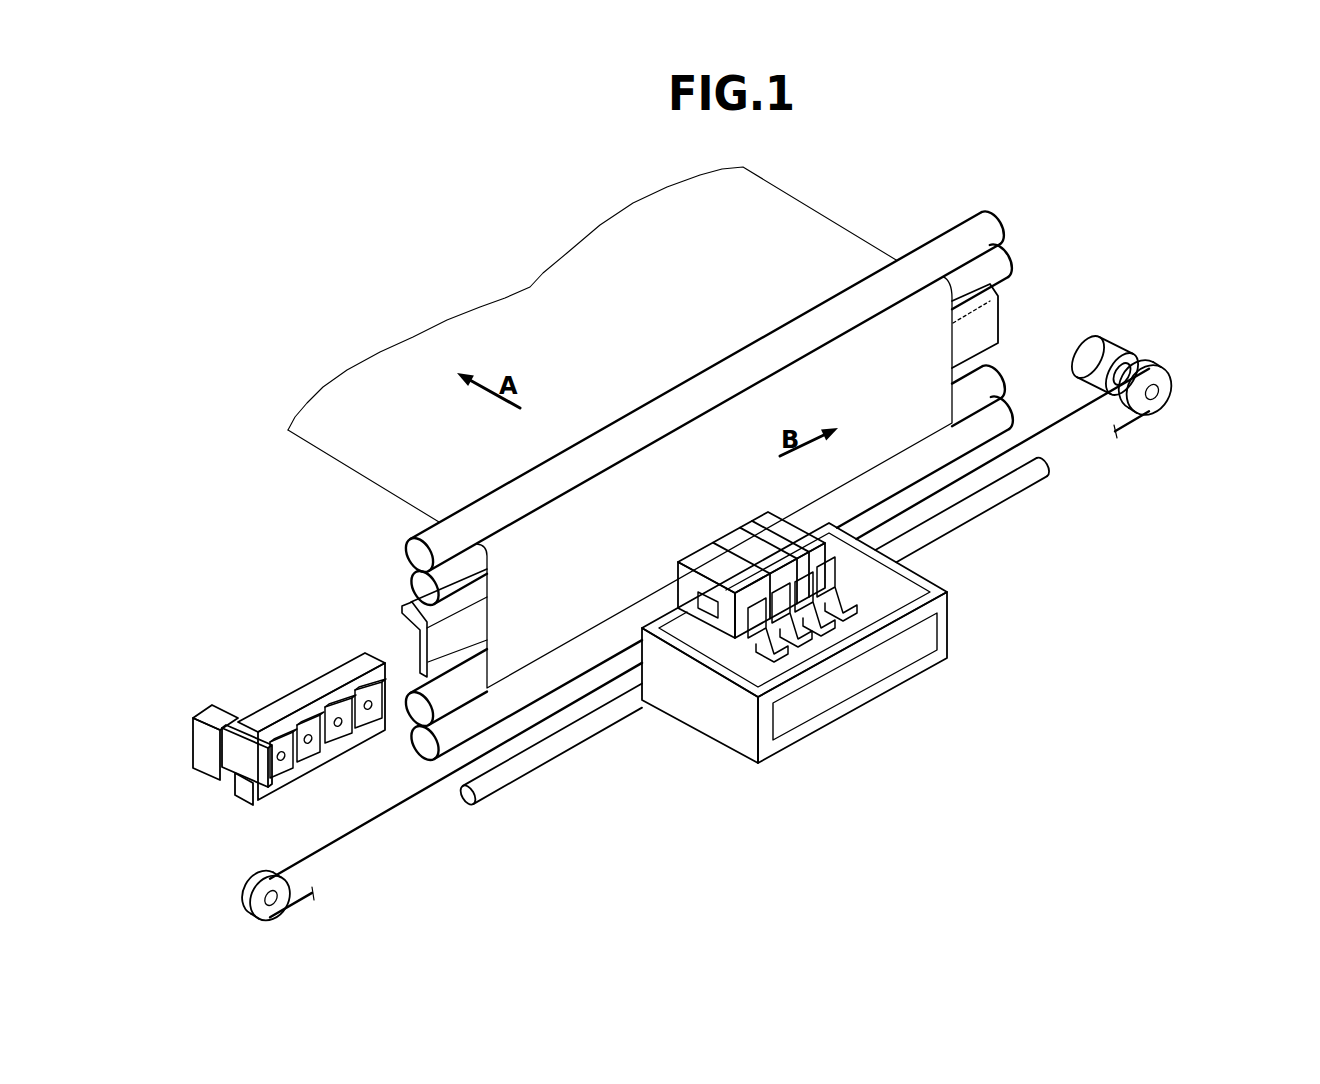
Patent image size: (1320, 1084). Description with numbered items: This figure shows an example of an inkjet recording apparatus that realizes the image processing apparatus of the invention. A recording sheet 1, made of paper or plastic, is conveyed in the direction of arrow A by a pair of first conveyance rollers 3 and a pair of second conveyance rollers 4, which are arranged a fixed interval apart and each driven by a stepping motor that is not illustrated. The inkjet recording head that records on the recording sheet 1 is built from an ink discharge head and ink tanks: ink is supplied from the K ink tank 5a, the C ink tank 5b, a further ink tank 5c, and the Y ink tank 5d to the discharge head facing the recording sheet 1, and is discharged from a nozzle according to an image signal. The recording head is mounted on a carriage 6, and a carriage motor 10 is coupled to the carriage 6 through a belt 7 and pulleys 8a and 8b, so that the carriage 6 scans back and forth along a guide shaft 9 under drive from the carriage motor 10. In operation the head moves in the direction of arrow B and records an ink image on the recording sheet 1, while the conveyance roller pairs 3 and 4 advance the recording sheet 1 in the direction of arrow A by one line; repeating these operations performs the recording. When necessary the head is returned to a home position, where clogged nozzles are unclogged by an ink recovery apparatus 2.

The recording sheet 1 is at (789, 203).
The ink recovery apparatus 2 is at (317, 690).
The pair of first conveyance rollers 3 is at (1007, 398).
The pair of second conveyance rollers 4 is at (1006, 247).
The K ink tank 5a is at (693, 558).
The C ink tank 5b is at (715, 545).
The ink cartridge (magenta) 5c is at (743, 532).
The Y ink tank 5d is at (768, 512).
The carriage 6 is at (953, 617).
The belt 7 is at (367, 822).
The pulley 8a is at (1166, 404).
The pulley 8b is at (247, 897).
The guide shaft 9 is at (537, 760).
The carriage motor 10 is at (1118, 332).